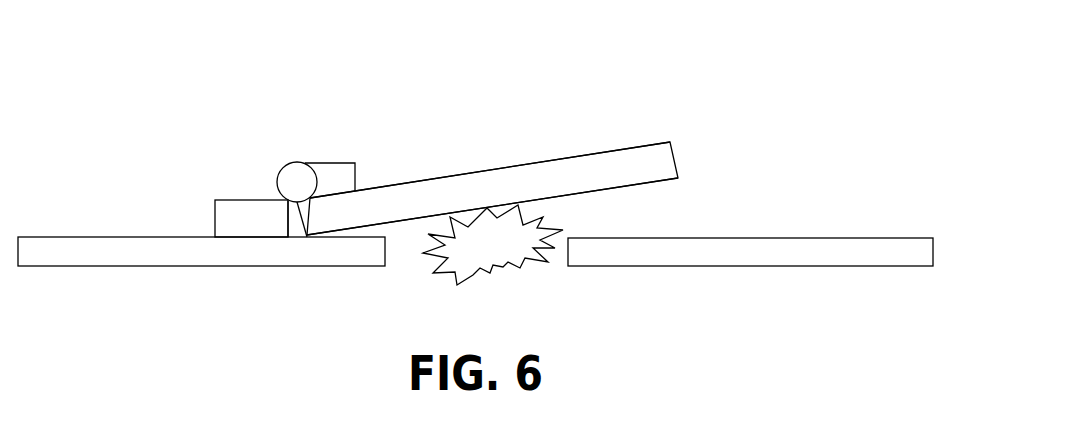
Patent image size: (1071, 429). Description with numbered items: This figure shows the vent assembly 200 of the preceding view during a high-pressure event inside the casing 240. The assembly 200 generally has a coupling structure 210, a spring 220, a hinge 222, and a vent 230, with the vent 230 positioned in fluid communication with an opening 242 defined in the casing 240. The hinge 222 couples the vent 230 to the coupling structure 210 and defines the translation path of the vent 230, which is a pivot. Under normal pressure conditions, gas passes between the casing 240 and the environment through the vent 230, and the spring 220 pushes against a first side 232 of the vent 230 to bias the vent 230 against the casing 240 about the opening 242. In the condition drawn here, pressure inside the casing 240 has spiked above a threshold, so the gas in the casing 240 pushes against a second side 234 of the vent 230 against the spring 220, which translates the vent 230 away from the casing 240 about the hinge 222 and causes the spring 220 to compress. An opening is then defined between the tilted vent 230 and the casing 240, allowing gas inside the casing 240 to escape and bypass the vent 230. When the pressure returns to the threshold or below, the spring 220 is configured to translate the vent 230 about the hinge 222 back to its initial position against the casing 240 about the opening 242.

The assembly 200 is at (475, 169).
The coupling structure 210 is at (215, 218).
The spring 220 is at (315, 174).
The hinge 222 is at (276, 178).
The vent 230 is at (496, 176).
The first side 232 is at (450, 173).
The second side 234 is at (610, 195).
The casing 240 is at (828, 238).
The opening 242 is at (408, 250).